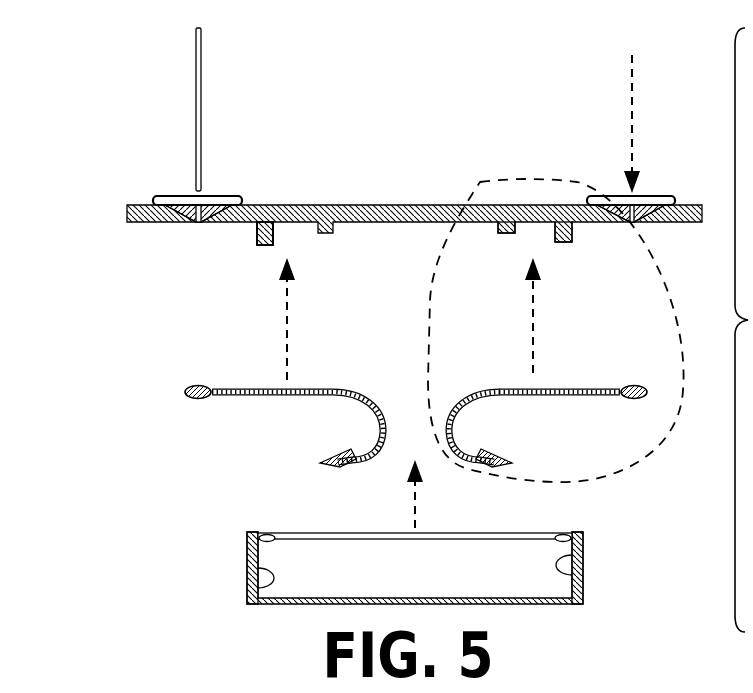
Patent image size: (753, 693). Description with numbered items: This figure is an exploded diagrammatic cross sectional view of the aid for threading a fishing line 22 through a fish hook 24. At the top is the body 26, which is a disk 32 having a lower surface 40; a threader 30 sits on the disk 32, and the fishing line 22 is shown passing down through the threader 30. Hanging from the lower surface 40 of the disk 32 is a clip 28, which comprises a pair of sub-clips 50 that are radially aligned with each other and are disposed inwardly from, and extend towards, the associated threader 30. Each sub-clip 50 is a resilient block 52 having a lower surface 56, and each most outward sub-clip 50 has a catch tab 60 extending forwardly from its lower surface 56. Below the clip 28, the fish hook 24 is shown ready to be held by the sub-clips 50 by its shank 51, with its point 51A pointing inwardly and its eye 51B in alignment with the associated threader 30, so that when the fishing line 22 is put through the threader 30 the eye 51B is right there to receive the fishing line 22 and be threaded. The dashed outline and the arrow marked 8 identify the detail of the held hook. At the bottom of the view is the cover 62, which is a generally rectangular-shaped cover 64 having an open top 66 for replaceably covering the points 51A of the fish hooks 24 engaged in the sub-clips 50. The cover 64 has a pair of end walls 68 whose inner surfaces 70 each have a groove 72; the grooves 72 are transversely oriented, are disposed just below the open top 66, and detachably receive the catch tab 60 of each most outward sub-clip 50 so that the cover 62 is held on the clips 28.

The detail region of FIG. 8 is at (413, 303).
The fishing line 22 is at (178, 48).
The fish hook 24 is at (543, 421).
The body 26 is at (108, 216).
The clip 28 is at (238, 242).
The threader 30 is at (230, 178).
The disk 32 is at (359, 205).
The lower surface 40 is at (185, 220).
The sub-clip 50 is at (300, 249).
The shank 51 is at (472, 382).
The point 51A is at (484, 483).
The eye 51B is at (640, 385).
The block 52 is at (346, 245).
The lower surface 56 is at (507, 237).
The catch tab 60 is at (257, 243).
The cover 62 is at (228, 537).
The generally rectangular-shaped cover 64 is at (316, 552).
The open top 66 is at (320, 531).
The end wall 68 is at (250, 577).
The inner surface 70 is at (258, 580).
The groove 72 is at (262, 536).